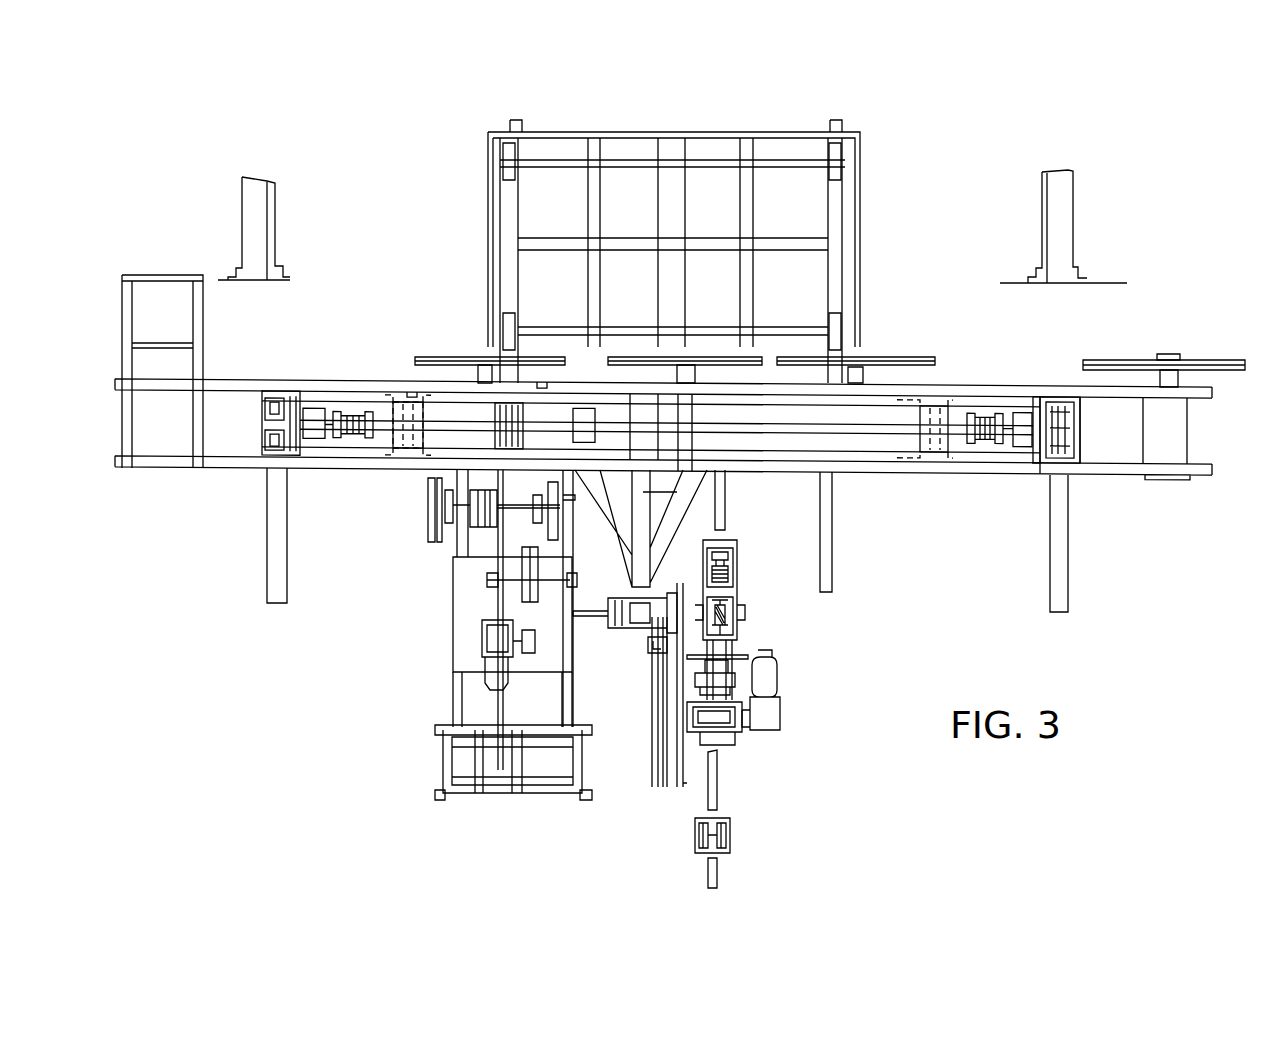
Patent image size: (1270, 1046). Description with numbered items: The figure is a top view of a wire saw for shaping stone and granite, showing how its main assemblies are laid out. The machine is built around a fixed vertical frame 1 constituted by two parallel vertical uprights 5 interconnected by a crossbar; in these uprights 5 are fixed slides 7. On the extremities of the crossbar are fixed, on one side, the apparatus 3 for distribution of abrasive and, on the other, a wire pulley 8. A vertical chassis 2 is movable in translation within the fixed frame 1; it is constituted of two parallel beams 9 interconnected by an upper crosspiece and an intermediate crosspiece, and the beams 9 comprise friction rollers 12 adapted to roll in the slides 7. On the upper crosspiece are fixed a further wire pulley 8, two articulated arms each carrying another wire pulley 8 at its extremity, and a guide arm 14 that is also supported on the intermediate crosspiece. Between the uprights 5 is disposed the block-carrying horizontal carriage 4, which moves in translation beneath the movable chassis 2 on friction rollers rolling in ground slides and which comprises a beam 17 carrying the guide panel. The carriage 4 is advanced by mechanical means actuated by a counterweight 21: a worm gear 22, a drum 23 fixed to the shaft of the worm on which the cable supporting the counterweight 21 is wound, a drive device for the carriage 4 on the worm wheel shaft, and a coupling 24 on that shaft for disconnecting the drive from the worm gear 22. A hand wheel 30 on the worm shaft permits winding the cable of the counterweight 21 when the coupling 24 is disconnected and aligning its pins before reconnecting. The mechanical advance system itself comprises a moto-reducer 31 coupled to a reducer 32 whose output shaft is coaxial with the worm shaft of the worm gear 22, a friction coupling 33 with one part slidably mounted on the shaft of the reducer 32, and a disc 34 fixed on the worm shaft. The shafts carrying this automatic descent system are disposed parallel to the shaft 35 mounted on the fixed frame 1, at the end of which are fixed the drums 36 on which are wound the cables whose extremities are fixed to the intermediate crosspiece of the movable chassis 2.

The fixed vertical frame 1 is at (1204, 466).
The vertical chassis 2 is at (1022, 388).
The apparatus for distribution of abrasive 3 is at (175, 285).
The block-carrying horizontal carriage 4 is at (876, 271).
The uprights 5 is at (1082, 450).
The slides 7 is at (265, 446).
The wire pulley 8 is at (418, 357).
The beams 9 is at (1036, 445).
The friction rollers 12 is at (277, 398).
The guide arm 14 is at (645, 492).
The beam 17 is at (647, 647).
The counterweight 21 is at (732, 835).
The worm gear 22 is at (730, 612).
The drum 23 is at (727, 575).
The coupling 24 is at (650, 610).
The hand wheel 30 is at (745, 657).
The moto-reducer 31 is at (777, 676).
The reducer 32 is at (720, 720).
The friction coupling 33 is at (690, 690).
The disc 34 is at (695, 676).
The shaft 35 is at (882, 420).
The drums 36 is at (358, 436).